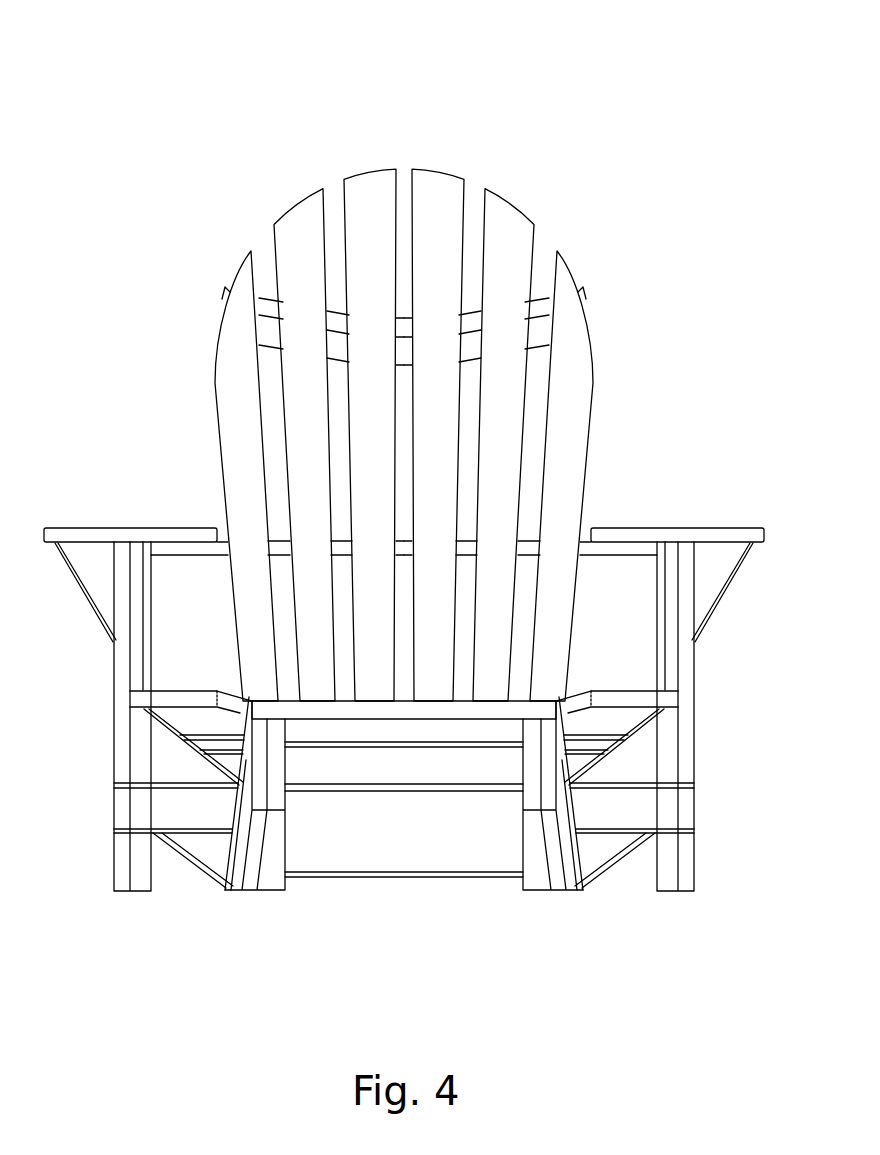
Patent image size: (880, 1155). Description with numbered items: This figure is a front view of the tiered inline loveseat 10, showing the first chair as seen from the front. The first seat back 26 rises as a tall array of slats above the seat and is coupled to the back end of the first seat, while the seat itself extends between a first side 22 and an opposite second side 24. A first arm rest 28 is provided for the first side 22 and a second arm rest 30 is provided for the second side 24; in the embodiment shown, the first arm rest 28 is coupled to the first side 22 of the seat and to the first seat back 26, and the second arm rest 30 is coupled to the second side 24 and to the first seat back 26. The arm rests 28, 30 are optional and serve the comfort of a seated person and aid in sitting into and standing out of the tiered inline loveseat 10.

The tiered inline loveseat 10 is at (124, 116).
The first side 22 is at (560, 712).
The second side 24 is at (250, 710).
The first seat back 26 is at (232, 367).
The first arm rest 28 is at (700, 528).
The second arm rest 30 is at (80, 527).